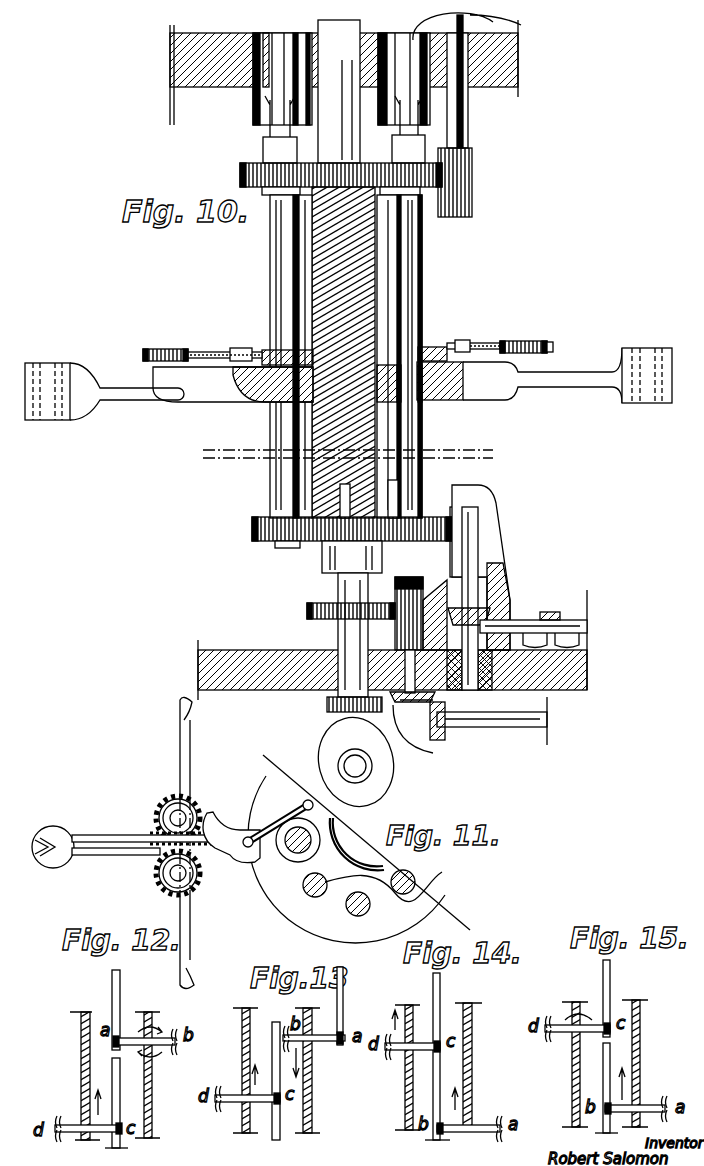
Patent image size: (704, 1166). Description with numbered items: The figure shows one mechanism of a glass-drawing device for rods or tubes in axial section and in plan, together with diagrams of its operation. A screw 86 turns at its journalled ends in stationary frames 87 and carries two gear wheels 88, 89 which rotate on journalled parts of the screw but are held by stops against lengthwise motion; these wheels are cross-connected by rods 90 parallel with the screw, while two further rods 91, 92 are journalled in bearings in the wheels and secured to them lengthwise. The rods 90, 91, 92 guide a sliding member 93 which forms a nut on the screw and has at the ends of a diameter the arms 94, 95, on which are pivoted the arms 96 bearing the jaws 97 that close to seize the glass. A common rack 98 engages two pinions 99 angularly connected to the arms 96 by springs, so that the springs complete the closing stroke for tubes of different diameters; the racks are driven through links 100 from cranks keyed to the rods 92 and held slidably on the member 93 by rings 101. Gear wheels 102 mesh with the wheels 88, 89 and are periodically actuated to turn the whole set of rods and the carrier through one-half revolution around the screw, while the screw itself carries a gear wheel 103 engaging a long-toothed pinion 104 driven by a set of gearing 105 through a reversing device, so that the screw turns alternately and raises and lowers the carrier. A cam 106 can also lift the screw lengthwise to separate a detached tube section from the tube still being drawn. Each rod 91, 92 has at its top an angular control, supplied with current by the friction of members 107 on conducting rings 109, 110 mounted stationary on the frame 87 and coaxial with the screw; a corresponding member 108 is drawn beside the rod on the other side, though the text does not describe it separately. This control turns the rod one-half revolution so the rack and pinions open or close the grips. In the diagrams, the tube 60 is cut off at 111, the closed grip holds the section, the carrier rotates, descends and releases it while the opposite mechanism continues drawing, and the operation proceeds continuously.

In FIG. 12, the tube 60 is at (116, 998).
In FIG. 13, the tube 60 is at (274, 1133).
In FIG. 14, the tube 60 is at (435, 990).
In FIG. 10, the screw 86 is at (362, 285).
In FIG. 10, the stationary frame 87 is at (507, 62).
In FIG. 10, the gear wheel 88 is at (438, 517).
In FIG. 10, the gear wheel 89 is at (428, 218).
In FIG. 10, the rod 90 is at (262, 545).
In FIG. 11, the rod 90 is at (413, 888).
In FIG. 10, the rod 91 is at (410, 320).
In FIG. 10, the rod 92 is at (283, 242).
In FIG. 10, the sliding member 93 is at (438, 387).
In FIG. 10, the arm 94 is at (205, 375).
In FIG. 11, the arm 94 is at (225, 868).
In FIG. 10, the arm 95 is at (498, 363).
In FIG. 10, the arm 96 is at (114, 390).
In FIG. 11, the arm 96 is at (182, 770).
In FIG. 10, the jaw 97 is at (37, 377).
In FIG. 11, the jaw 97 is at (62, 833).
In FIG. 10, the rack 98 is at (200, 348).
In FIG. 11, the rack 98 is at (203, 835).
In FIG. 10, the pinion 99 is at (170, 347).
In FIG. 11, the pinion 99 is at (158, 862).
In FIG. 11, the link 100 is at (268, 848).
In FIG. 10, the ring 101 is at (265, 352).
In FIG. 10, the gear wheel 102 is at (463, 190).
In FIG. 10, the gear wheel 103 is at (307, 612).
In FIG. 10, the long-toothed pinion 104 is at (405, 630).
In FIG. 10, the set of gearing 105 is at (427, 747).
In FIG. 10, the cam 106 is at (378, 780).
In FIG. 10, the member 107 is at (293, 137).
In FIG. 10, the clip block 108 is at (420, 127).
In FIG. 10, the conducting ring 109 is at (265, 95).
In FIG. 10, the conducting ring 110 is at (521, 24).
In FIG. 12, the cut-off point 111 is at (113, 1052).